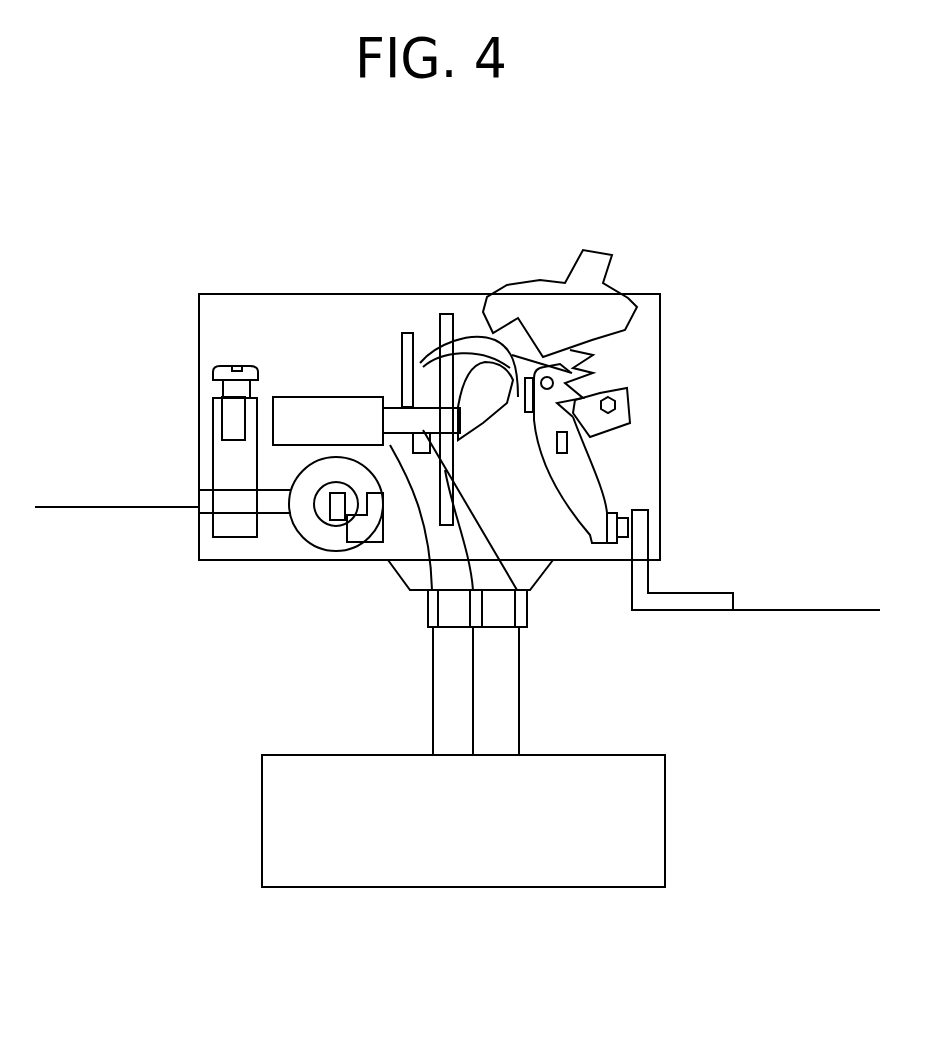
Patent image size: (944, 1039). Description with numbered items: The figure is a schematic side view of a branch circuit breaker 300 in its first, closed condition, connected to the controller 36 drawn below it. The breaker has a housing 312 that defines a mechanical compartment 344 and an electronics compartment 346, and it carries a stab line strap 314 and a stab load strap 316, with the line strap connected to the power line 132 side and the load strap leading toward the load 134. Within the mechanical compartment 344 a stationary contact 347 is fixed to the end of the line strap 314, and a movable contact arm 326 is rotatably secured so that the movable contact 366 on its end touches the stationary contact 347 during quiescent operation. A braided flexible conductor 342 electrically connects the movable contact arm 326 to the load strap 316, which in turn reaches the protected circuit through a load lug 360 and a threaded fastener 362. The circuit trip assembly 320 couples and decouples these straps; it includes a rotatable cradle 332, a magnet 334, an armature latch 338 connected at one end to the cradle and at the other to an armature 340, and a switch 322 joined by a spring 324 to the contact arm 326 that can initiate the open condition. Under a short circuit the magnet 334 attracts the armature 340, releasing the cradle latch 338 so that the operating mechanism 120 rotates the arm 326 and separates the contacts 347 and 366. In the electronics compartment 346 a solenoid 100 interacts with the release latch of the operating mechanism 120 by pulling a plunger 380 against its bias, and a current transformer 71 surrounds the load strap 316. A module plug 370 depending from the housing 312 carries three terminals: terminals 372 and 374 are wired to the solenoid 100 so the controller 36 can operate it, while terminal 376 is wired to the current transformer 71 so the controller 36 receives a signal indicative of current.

The controller 36 is at (567, 887).
The current transformer 71 is at (318, 537).
The solenoid 100 is at (293, 407).
The operating mechanism 120 is at (505, 430).
The power line 132 is at (810, 609).
The load 134 is at (87, 505).
The circuit breaker 300 is at (176, 356).
The housing 312 is at (199, 312).
The line strap 314 is at (680, 598).
The load strap 316 is at (207, 507).
The circuit trip assembly 320 is at (432, 312).
The switch 322 is at (612, 255).
The spring 324 is at (637, 305).
The movable contact arm 326 is at (578, 475).
The rotatable cradle 332 is at (618, 387).
The magnet 334 is at (398, 333).
The armature latch 338 is at (477, 410).
The armature 340 is at (460, 335).
The braided flexible conductor 342 is at (473, 340).
The mechanical compartment 344 is at (523, 438).
The electronics compartment 346 is at (254, 525).
The stationary contact 347 is at (627, 510).
The load lug 360 is at (225, 527).
The threaded fastener 362 is at (245, 367).
The movable contact 366 is at (622, 585).
The module plug 370 is at (545, 577).
The terminal 372 is at (520, 628).
The terminal 374 is at (520, 630).
The terminal 376 is at (432, 628).
The plunger 380 is at (400, 413).